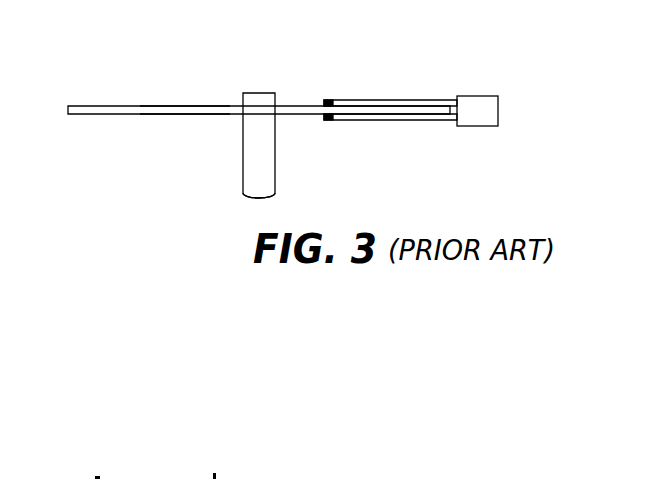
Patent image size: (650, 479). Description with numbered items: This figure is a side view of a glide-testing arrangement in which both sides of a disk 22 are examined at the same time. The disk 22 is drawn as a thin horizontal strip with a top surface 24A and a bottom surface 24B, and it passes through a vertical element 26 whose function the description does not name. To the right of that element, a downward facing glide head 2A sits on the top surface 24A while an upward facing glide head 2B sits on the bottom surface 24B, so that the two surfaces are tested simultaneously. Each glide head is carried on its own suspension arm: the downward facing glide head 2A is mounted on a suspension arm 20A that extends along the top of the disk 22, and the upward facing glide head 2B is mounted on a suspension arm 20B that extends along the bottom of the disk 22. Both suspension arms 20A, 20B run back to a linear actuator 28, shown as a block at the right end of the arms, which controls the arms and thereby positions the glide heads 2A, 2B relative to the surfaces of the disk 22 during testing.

The disk 22 is at (103, 116).
The top surface 24A is at (182, 106).
The bottom surface 24B is at (182, 114).
The cylinder 26 is at (257, 92).
The suspension arm 20A is at (377, 100).
The suspension arm 20B is at (377, 121).
The downward facing glide head 2A is at (324, 101).
The upward facing glide head 2B is at (325, 119).
The linear actuator 28 is at (470, 95).